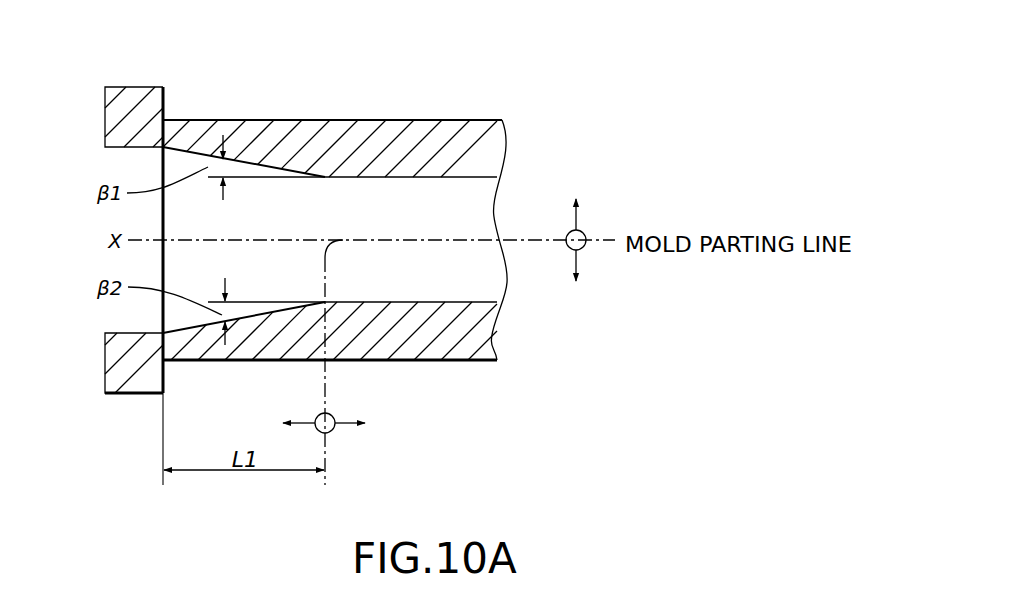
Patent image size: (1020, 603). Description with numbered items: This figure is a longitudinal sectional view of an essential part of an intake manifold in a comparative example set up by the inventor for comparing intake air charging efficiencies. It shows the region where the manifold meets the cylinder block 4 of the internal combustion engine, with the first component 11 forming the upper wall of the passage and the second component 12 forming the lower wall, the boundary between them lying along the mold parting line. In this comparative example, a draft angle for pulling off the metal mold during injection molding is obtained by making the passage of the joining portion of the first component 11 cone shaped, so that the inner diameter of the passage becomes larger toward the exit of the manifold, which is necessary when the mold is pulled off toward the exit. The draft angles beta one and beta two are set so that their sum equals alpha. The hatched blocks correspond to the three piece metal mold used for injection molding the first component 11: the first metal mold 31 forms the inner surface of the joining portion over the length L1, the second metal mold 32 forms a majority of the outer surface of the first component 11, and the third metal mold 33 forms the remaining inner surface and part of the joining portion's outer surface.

The cylinder block 4 is at (147, 100).
The first component 11 is at (440, 98).
The second component 12 is at (449, 380).
The first metal mold 31 is at (200, 154).
The second metal mold 32 is at (195, 325).
The third metal mold 33 is at (165, 128).